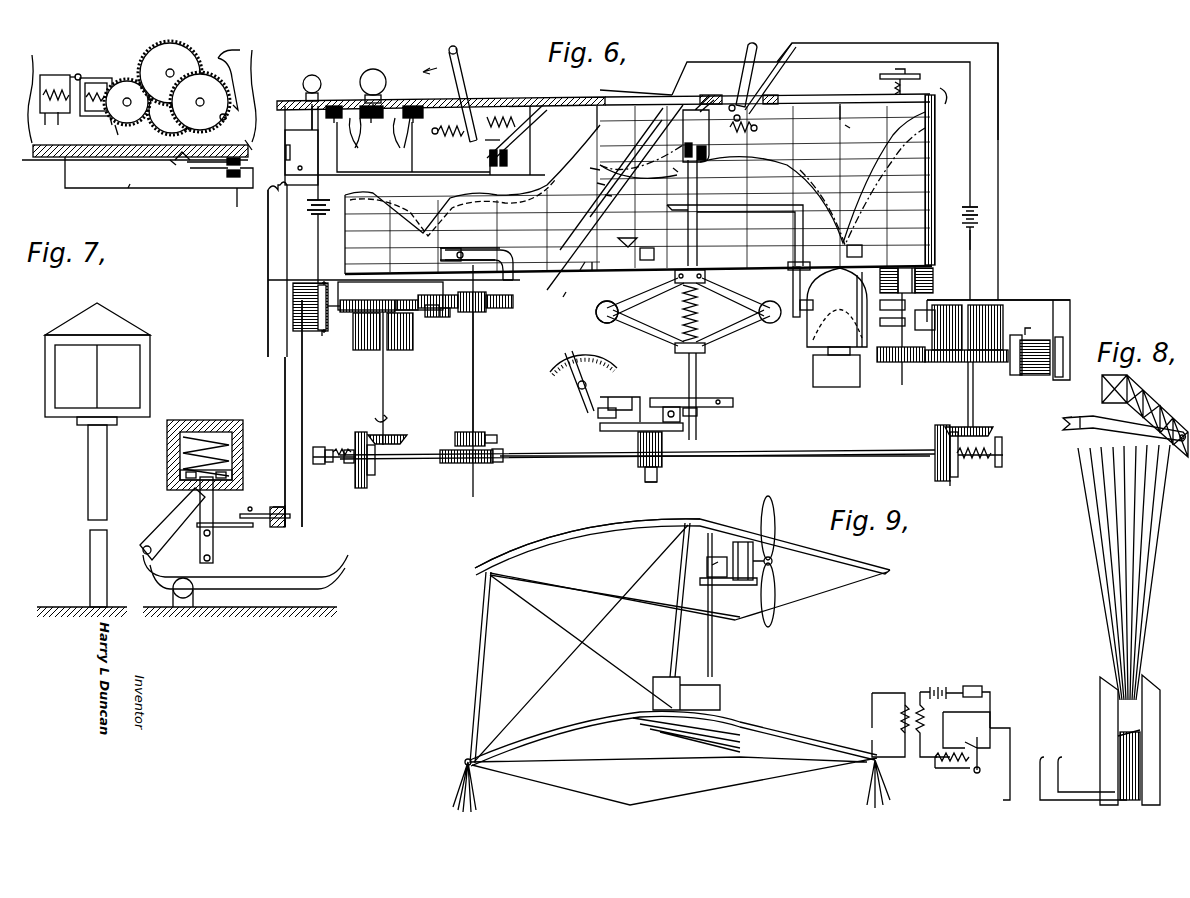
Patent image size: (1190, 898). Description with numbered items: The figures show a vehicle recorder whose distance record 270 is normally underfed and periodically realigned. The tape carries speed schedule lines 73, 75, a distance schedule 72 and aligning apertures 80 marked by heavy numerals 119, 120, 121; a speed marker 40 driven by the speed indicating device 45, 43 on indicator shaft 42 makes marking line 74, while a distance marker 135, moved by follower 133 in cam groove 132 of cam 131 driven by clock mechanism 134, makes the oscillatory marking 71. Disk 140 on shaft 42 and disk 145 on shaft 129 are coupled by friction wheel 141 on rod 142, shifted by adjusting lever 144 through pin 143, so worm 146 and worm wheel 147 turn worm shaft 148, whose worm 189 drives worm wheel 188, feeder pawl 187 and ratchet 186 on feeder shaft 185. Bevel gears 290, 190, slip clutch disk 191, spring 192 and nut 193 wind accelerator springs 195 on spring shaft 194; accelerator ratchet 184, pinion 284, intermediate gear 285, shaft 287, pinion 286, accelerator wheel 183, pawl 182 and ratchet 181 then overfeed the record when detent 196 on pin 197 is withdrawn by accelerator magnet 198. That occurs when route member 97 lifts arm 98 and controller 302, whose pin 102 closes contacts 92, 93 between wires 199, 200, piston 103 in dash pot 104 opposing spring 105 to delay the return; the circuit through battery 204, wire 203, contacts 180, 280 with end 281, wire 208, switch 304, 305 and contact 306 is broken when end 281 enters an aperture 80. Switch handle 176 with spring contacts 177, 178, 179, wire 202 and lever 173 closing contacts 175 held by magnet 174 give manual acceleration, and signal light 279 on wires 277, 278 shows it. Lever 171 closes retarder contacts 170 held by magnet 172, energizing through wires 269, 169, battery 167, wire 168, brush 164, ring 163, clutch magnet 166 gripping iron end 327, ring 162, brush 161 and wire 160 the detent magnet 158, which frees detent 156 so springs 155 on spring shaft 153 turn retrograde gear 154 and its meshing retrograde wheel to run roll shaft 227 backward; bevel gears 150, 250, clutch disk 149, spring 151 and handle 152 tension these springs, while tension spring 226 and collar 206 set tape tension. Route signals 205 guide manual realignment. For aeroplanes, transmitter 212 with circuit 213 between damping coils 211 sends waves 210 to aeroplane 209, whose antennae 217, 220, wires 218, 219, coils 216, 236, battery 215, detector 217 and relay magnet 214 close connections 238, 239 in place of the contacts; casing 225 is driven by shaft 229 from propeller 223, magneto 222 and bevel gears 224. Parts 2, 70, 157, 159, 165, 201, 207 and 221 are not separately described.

In FIG. 7, the wire 2 is at (58, 112).
In FIG. 6, the speed marker 40 is at (678, 173).
In FIG. 6, the indicator shaft 42 is at (697, 360).
In FIG. 6, the speed indicating device 43 is at (699, 318).
In FIG. 6, the speed indicating device 45 is at (603, 316).
In FIG. 6, the tank bottom 70 is at (592, 272).
In FIG. 6, the oscillatory marking 71 is at (619, 241).
In FIG. 6, the oscillatory distance schedule 72 is at (642, 216).
In FIG. 6, the speed schedule line 73 is at (605, 195).
In FIG. 6, the speed marking line 74 is at (597, 183).
In FIG. 6, the speed schedule line 75 is at (590, 170).
In FIG. 7, the aligning aperture 80 is at (175, 160).
In FIG. 6, the aligning aperture 80 is at (654, 255).
In FIG. 6, the automatic controller contact 92 is at (243, 520).
In FIG. 6, the automatic controller contact 93 is at (273, 528).
In FIG. 6, the route member 97 is at (173, 588).
In FIG. 6, the aligning arm 98 is at (282, 572).
In FIG. 6, the pin 102 is at (228, 516).
In FIG. 6, the piston 103 is at (180, 470).
In FIG. 6, the dash pot 104 is at (167, 444).
In FIG. 6, the spring 105 is at (232, 445).
In FIG. 6, the indicator 119 is at (452, 240).
In FIG. 6, the indicator 120 is at (674, 236).
In FIG. 6, the indicator 121 is at (876, 233).
In FIG. 6, the shaft 129 is at (660, 486).
In FIG. 6, the cam 131 is at (837, 307).
In FIG. 6, the cam groove 132 is at (797, 283).
In FIG. 6, the follower 133 is at (797, 318).
In FIG. 6, the clock mechanism 134 is at (813, 374).
In FIG. 6, the oscillatory distance marker 135 is at (706, 205).
In FIG. 6, the disk 140 is at (727, 408).
In FIG. 6, the friction drive wheel 141 is at (675, 406).
In FIG. 6, the rod 142 is at (606, 422).
In FIG. 6, the collar 143 is at (598, 412).
In FIG. 6, the adjusting lever 144 is at (590, 370).
In FIG. 6, the disk 145 is at (622, 432).
In FIG. 6, the worm 146 is at (646, 468).
In FIG. 6, the worm wheel 147 is at (660, 474).
In FIG. 6, the worm shaft 148 is at (731, 459).
In FIG. 6, the clutch disk 149 is at (935, 430).
In FIG. 6, the bevel gear 150 is at (996, 430).
In FIG. 6, the spring 151 is at (975, 462).
In FIG. 6, the nut 152 is at (1003, 455).
In FIG. 6, the spring shaft 153 is at (967, 390).
In FIG. 6, the retrograde gear 154 is at (988, 363).
In FIG. 6, the retrograde spring 155 is at (1004, 330).
In FIG. 6, the detent 156 is at (1016, 372).
In FIG. 6, the switch 157 is at (1032, 336).
In FIG. 6, the retrograde detent magnet 158 is at (1050, 376).
In FIG. 6, the rod 159 is at (772, 82).
In FIG. 6, the wire 160 is at (1003, 298).
In FIG. 6, the brush 161 is at (925, 327).
In FIG. 6, the contact ring 162 is at (889, 327).
In FIG. 6, the contact ring 163 is at (889, 305).
In FIG. 6, the brush 164 is at (940, 290).
In FIG. 6, the coil 165 is at (932, 263).
In FIG. 6, the retrograde clutch magnet 166 is at (962, 216).
In FIG. 6, the battery 167 is at (980, 213).
In FIG. 6, the wire 168 is at (972, 250).
In FIG. 6, the wire 169 is at (680, 62).
In FIG. 6, the retarder contacts 170 is at (714, 160).
In FIG. 6, the retrograde actuating lever 171 is at (740, 80).
In FIG. 6, the holding magnet 172 is at (692, 108).
In FIG. 6, the manual accelerator lever 173 is at (458, 70).
In FIG. 6, the holding magnet 174 is at (506, 116).
In FIG. 6, the manual accelerator contacts 175 is at (489, 156).
In FIG. 6, the manual control switch handle 176 is at (375, 68).
In FIG. 6, the spring contact 177 is at (352, 140).
In FIG. 6, the spring contact 178 is at (388, 150).
In FIG. 6, the spring contact 179 is at (420, 143).
In FIG. 7, the restoring contact spring 180 is at (215, 173).
In FIG. 6, the restoring contact spring 180 is at (510, 255).
In FIG. 7, the fine toothed ratchet 181 is at (236, 75).
In FIG. 6, the fine toothed ratchet 181 is at (478, 313).
In FIG. 7, the spring actuated pawl 182 is at (228, 112).
In FIG. 6, the spring actuated pawl 182 is at (516, 300).
In FIG. 7, the accelerator wheel 183 is at (261, 148).
In FIG. 6, the accelerator wheel 183 is at (505, 309).
In FIG. 7, the accelerator ratchet 184 is at (115, 125).
In FIG. 6, the accelerator ratchet 184 is at (410, 318).
In FIG. 7, the feeder shaft 185 is at (190, 123).
In FIG. 6, the feeder shaft 185 is at (476, 351).
In FIG. 6, the fine toothed ratchet 186 is at (481, 431).
In FIG. 6, the feeder pawl 187 is at (487, 440).
In FIG. 6, the distance feeder worm wheel 188 is at (503, 458).
In FIG. 6, the worm 189 is at (462, 464).
In FIG. 6, the bevel winding gear 190 is at (409, 440).
In FIG. 6, the slip clutch disk 191 is at (350, 449).
In FIG. 6, the spring 192 is at (337, 450).
In FIG. 6, the adjusting nut 193 is at (320, 465).
In FIG. 7, the spring shaft 194 is at (127, 80).
In FIG. 6, the spring shaft 194 is at (386, 403).
In FIG. 6, the accelerator spring 195 is at (405, 352).
In FIG. 7, the accelerator detent 196 is at (90, 117).
In FIG. 6, the accelerator detent 196 is at (334, 318).
In FIG. 7, the pin 197 is at (79, 74).
In FIG. 6, the pin 197 is at (323, 334).
In FIG. 7, the accelerator magnet 198 is at (53, 92).
In FIG. 6, the accelerator magnet 198 is at (306, 282).
In FIG. 6, the wire 199 is at (304, 392).
In FIG. 6, the wire 200 is at (285, 390).
In FIG. 6, the box 201 is at (268, 280).
In FIG. 6, the wire 202 is at (464, 155).
In FIG. 7, the wire 203 is at (237, 207).
In FIG. 6, the wire 203 is at (318, 220).
In FIG. 7, the battery 204 is at (128, 189).
In FIG. 6, the battery 204 is at (270, 210).
In FIG. 6, the route signal 205 is at (150, 380).
In FIG. 6, the screw collar 206 is at (921, 77).
In FIG. 6, the wall 207 is at (947, 176).
In FIG. 6, the wire 208 is at (582, 272).
In FIG. 8, the aeroplane 209 is at (1183, 412).
In FIG. 8, the waves 210 is at (1092, 556).
In FIG. 8, the damping coils 211 is at (1142, 705).
In FIG. 8, the transmitting mechanism 212 is at (1118, 748).
In FIG. 8, the oscillatory circuit 213 is at (1072, 782).
In FIG. 9, the relay magnet 214 is at (950, 770).
In FIG. 9, the battery 215 is at (939, 686).
In FIG. 9, the coil 216 is at (901, 728).
In FIG. 9, the receiving antenna 217 is at (973, 686).
In FIG. 9, the wire 218 is at (663, 758).
In FIG. 9, the wire 219 is at (872, 707).
In FIG. 9, the receiving antenna 220 is at (462, 762).
In FIG. 9, the rail 221 is at (478, 590).
In FIG. 9, the magneto 222 is at (741, 542).
In FIG. 9, the propeller 223 is at (773, 622).
In FIG. 9, the bevel gears 224 is at (705, 558).
In FIG. 9, the protective casing 225 is at (686, 693).
In FIG. 6, the tension spring 226 is at (850, 125).
In FIG. 6, the distance roll shaft 227 is at (900, 378).
In FIG. 9, the shaft 229 is at (714, 652).
In FIG. 9, the coil 236 is at (918, 710).
In FIG. 9, the relay circuit connection 238 is at (968, 804).
In FIG. 9, the relay circuit connection 239 is at (1003, 800).
In FIG. 6, the bevel gear 250 is at (952, 481).
In FIG. 6, the return wire 269 is at (563, 298).
In FIG. 7, the distance record 270 is at (47, 161).
In FIG. 6, the distance record 270 is at (840, 104).
In FIG. 6, the wire 277 is at (295, 118).
In FIG. 6, the wire 278 is at (332, 106).
In FIG. 6, the signal light 279 is at (312, 75).
In FIG. 7, the light spring contact 280 is at (207, 168).
In FIG. 6, the light spring contact 280 is at (470, 251).
In FIG. 7, the angular end 281 is at (173, 163).
In FIG. 7, the pinion 284 is at (110, 117).
In FIG. 6, the pinion 284 is at (380, 300).
In FIG. 7, the intermediate gear 285 is at (145, 50).
In FIG. 6, the intermediate gear 285 is at (406, 298).
In FIG. 7, the intermediate pinion 286 is at (180, 52).
In FIG. 6, the intermediate pinion 286 is at (446, 318).
In FIG. 6, the shaft 287 is at (432, 318).
In FIG. 6, the bevel gear 290 is at (370, 480).
In FIG. 6, the controller 302 is at (203, 541).
In FIG. 6, the switch 304 is at (301, 157).
In FIG. 6, the switch contact 305 is at (291, 157).
In FIG. 6, the contact 306 is at (304, 175).
In FIG. 6, the iron end 327 is at (940, 270).